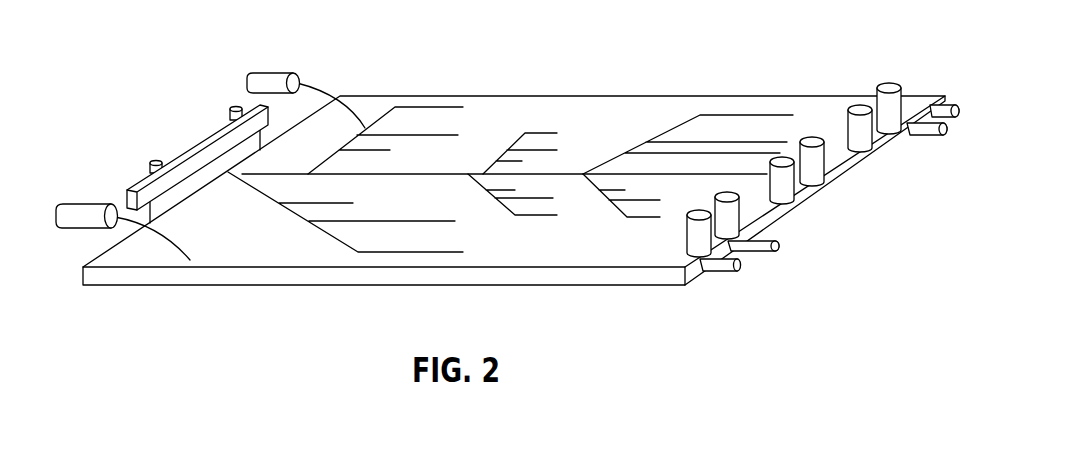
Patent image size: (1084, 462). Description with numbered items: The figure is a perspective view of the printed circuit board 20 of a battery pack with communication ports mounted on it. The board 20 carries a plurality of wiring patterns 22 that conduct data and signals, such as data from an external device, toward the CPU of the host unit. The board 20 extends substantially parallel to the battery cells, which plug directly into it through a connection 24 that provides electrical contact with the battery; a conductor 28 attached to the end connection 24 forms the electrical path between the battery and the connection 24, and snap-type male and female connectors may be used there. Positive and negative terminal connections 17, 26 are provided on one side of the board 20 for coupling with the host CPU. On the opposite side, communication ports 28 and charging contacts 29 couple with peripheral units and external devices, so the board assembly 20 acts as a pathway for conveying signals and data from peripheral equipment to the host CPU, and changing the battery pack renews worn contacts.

The positive terminal connection 17 is at (281, 66).
The printed circuit board 20 is at (650, 93).
The wiring patterns 22 is at (538, 130).
The connection 24 is at (208, 128).
The negative terminal connection 26 is at (102, 203).
The conductor / communication ports 28 is at (147, 161).
The charging contacts 29 is at (780, 252).